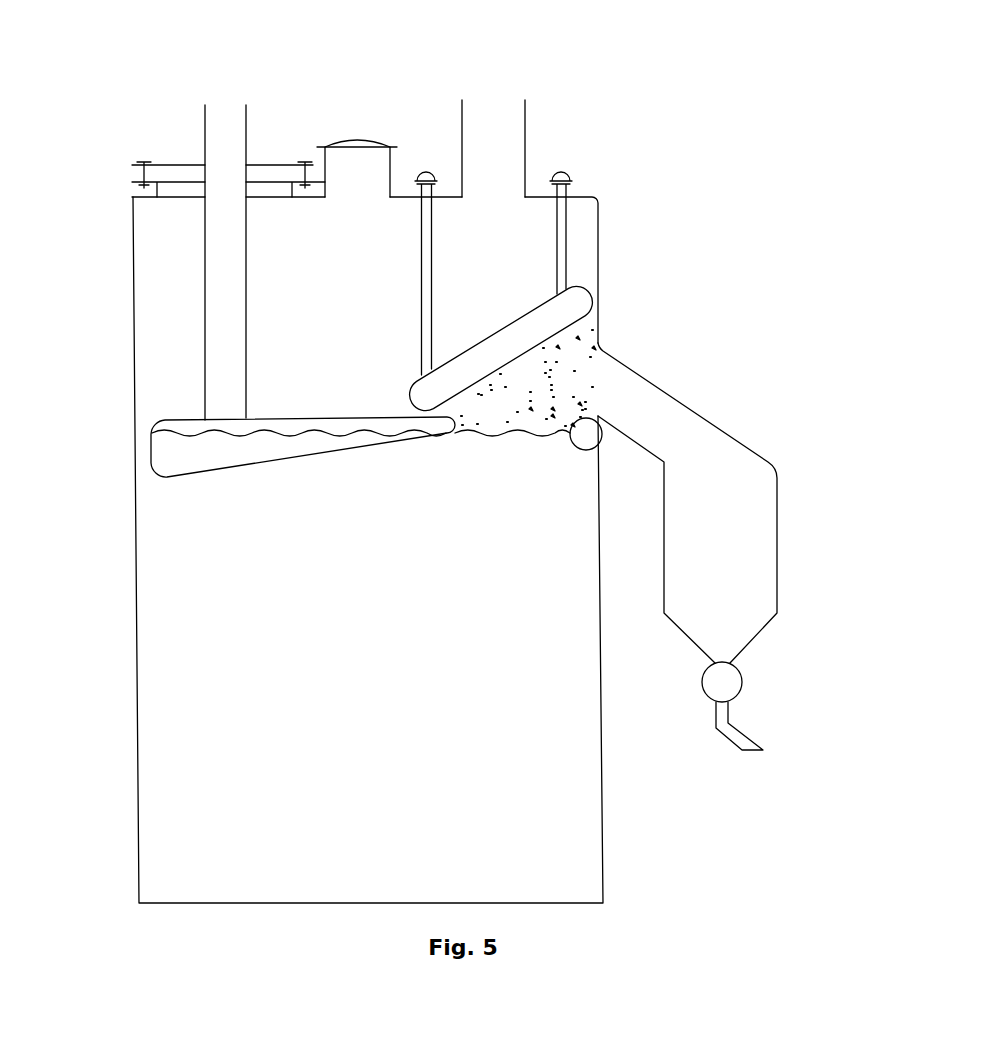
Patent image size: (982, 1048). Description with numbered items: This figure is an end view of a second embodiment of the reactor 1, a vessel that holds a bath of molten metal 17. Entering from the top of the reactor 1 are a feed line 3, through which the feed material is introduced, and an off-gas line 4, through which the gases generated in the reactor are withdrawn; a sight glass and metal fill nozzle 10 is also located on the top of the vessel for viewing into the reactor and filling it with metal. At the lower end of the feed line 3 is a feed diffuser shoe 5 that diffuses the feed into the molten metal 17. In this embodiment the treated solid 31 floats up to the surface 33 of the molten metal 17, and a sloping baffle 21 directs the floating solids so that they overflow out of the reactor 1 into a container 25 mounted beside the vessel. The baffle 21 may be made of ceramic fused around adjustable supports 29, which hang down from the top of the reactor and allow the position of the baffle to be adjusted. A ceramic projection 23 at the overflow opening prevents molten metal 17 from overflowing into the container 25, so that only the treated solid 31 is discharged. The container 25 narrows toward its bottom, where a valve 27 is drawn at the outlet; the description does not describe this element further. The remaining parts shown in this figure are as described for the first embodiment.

The reactor 1 is at (135, 577).
The feed line 3 is at (203, 308).
The off-gas line 4 is at (530, 128).
The feed diffuser shoe 5 is at (173, 455).
The sight glass and metal fill nozzle 10 is at (333, 142).
The molten metal 17 is at (250, 687).
The sloping baffle 21 is at (556, 311).
The ceramic projection 23 is at (590, 438).
The container 25 is at (778, 506).
The valve 27 is at (746, 680).
The adjustable support 29 is at (434, 263).
The treated solid 31 is at (582, 384).
The surface 33 is at (255, 433).